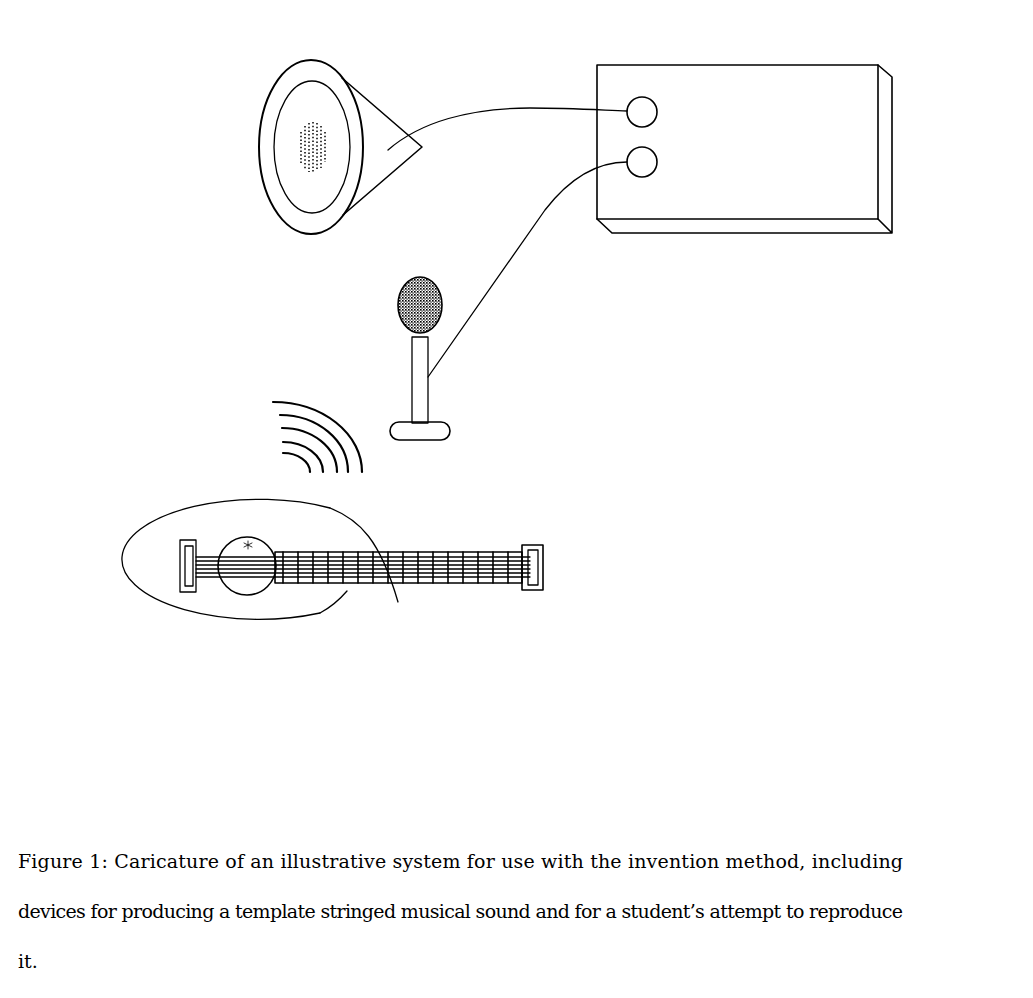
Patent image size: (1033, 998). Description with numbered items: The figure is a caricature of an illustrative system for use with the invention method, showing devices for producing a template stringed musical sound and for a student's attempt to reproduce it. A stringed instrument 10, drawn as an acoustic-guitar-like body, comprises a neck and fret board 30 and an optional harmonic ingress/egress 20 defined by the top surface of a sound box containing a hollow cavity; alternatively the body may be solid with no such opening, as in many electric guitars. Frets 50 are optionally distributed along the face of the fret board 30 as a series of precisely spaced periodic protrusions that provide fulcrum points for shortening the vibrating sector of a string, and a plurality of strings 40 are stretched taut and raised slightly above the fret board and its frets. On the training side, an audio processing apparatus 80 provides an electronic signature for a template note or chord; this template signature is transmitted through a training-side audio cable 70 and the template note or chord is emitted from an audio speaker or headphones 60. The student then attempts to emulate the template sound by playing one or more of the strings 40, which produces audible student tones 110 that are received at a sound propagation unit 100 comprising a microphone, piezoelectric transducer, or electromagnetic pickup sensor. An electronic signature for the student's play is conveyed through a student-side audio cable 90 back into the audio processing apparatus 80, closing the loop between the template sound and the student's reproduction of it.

The stringed instrument 10 is at (147, 553).
The harmonic ingress/egress 20 is at (250, 545).
The neck and fret board 30 is at (467, 552).
The strings 40 is at (253, 565).
The frets 50 is at (345, 542).
The audio speaker or headphones 60 is at (280, 97).
The training-side audio cable 70 is at (532, 103).
The audio processing apparatus 80 is at (756, 75).
The student-side audio cable 90 is at (530, 203).
The sound propagation unit 100 is at (406, 365).
The audible student tones 110 is at (268, 420).